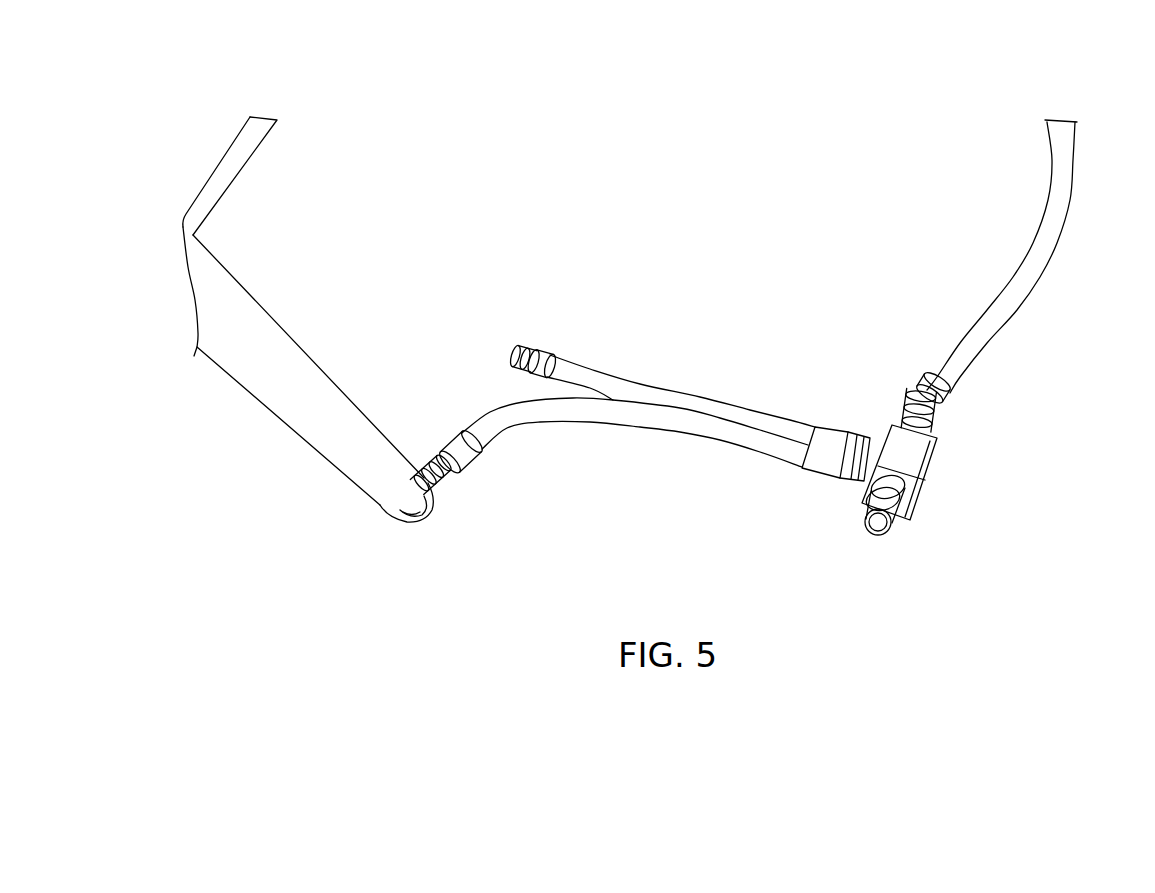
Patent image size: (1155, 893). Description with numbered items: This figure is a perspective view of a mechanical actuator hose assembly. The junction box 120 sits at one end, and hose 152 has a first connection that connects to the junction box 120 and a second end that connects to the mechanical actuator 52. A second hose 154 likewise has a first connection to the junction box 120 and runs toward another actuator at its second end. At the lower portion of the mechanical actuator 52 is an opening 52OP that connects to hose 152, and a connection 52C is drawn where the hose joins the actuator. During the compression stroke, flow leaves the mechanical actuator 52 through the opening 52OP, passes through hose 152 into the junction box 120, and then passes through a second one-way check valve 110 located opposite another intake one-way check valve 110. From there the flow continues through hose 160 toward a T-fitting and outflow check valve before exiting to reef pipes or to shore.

The mechanical actuator 52 is at (303, 351).
The bracket connector 52C is at (410, 475).
The opening 52OP is at (450, 488).
The one-way check valve 110 is at (937, 417).
The junction box 120 is at (915, 475).
The hose 152 is at (638, 427).
The hose 154 is at (698, 397).
The hose 160 is at (1022, 248).